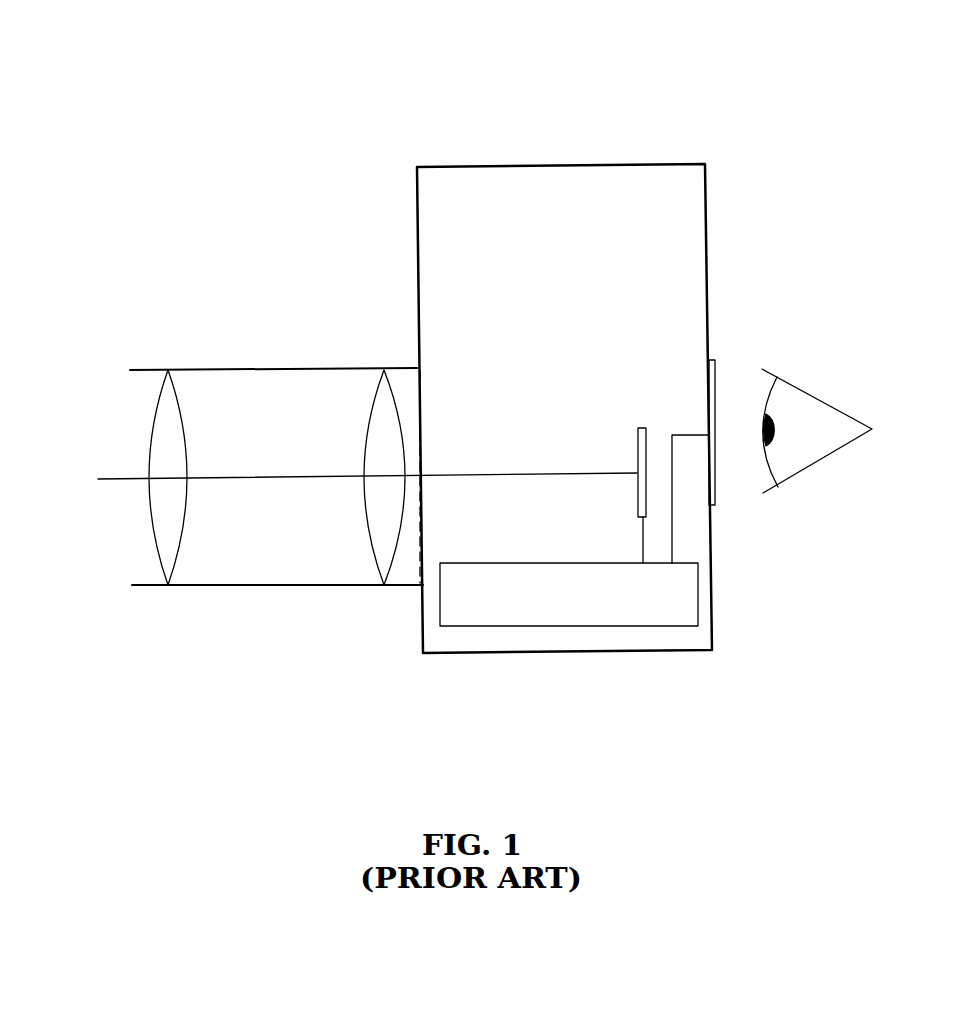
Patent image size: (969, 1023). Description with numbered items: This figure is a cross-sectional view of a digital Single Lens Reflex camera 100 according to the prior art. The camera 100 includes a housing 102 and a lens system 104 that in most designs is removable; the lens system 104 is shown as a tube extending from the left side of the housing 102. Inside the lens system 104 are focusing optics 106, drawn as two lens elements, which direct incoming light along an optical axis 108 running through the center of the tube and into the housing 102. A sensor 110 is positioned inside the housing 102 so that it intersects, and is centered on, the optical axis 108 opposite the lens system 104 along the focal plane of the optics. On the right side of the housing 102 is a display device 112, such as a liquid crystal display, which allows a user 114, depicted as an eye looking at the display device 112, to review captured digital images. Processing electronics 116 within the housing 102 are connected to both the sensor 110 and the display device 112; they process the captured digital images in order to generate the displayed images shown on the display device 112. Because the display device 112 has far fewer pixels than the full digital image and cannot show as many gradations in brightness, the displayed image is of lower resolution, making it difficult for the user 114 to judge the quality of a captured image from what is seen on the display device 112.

The digital SLR camera 100 is at (264, 71).
The housing 102 is at (417, 212).
The lens system 104 is at (293, 368).
The focusing optics 106 is at (372, 535).
The optical axis 108 is at (102, 479).
The sensor 110 is at (642, 428).
The display device 112 is at (714, 373).
The user 114 is at (792, 478).
The processing electronics 116 is at (563, 626).